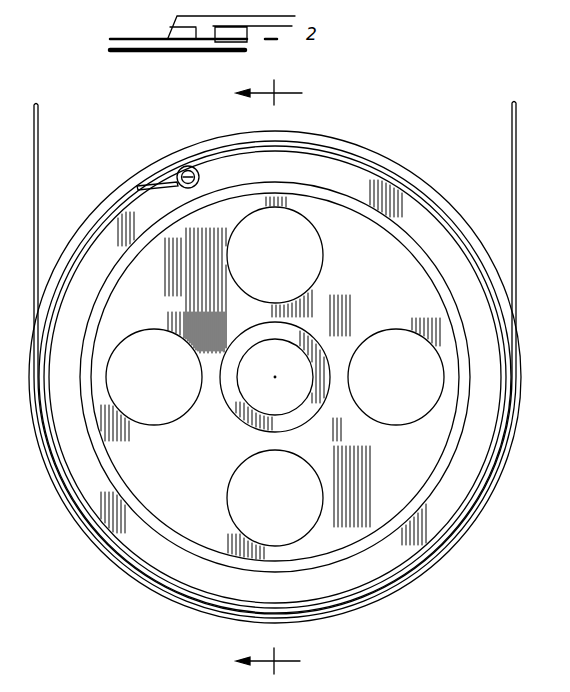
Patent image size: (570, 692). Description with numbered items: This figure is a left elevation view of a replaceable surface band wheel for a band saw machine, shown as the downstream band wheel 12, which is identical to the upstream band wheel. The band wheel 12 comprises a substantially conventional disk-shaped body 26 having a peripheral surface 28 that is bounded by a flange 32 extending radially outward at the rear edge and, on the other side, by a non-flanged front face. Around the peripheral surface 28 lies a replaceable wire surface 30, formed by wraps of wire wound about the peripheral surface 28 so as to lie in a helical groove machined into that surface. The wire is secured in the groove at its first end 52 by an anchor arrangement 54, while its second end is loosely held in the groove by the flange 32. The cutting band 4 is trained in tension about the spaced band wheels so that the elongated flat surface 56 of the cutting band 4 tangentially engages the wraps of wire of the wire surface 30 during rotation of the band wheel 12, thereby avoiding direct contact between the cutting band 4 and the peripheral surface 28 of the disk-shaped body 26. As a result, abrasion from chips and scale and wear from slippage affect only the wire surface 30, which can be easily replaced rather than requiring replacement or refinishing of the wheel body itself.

The cutting band 4 is at (529, 209).
The downstream band wheel 12 is at (365, 143).
The disk-shaped body 26 is at (378, 300).
The peripheral surface 28 is at (375, 165).
The wire surface 30 is at (430, 193).
The flange 32 is at (404, 163).
The first end 52 is at (150, 186).
The anchor arrangement 54 is at (194, 166).
The elongated flat surface 56 is at (512, 233).